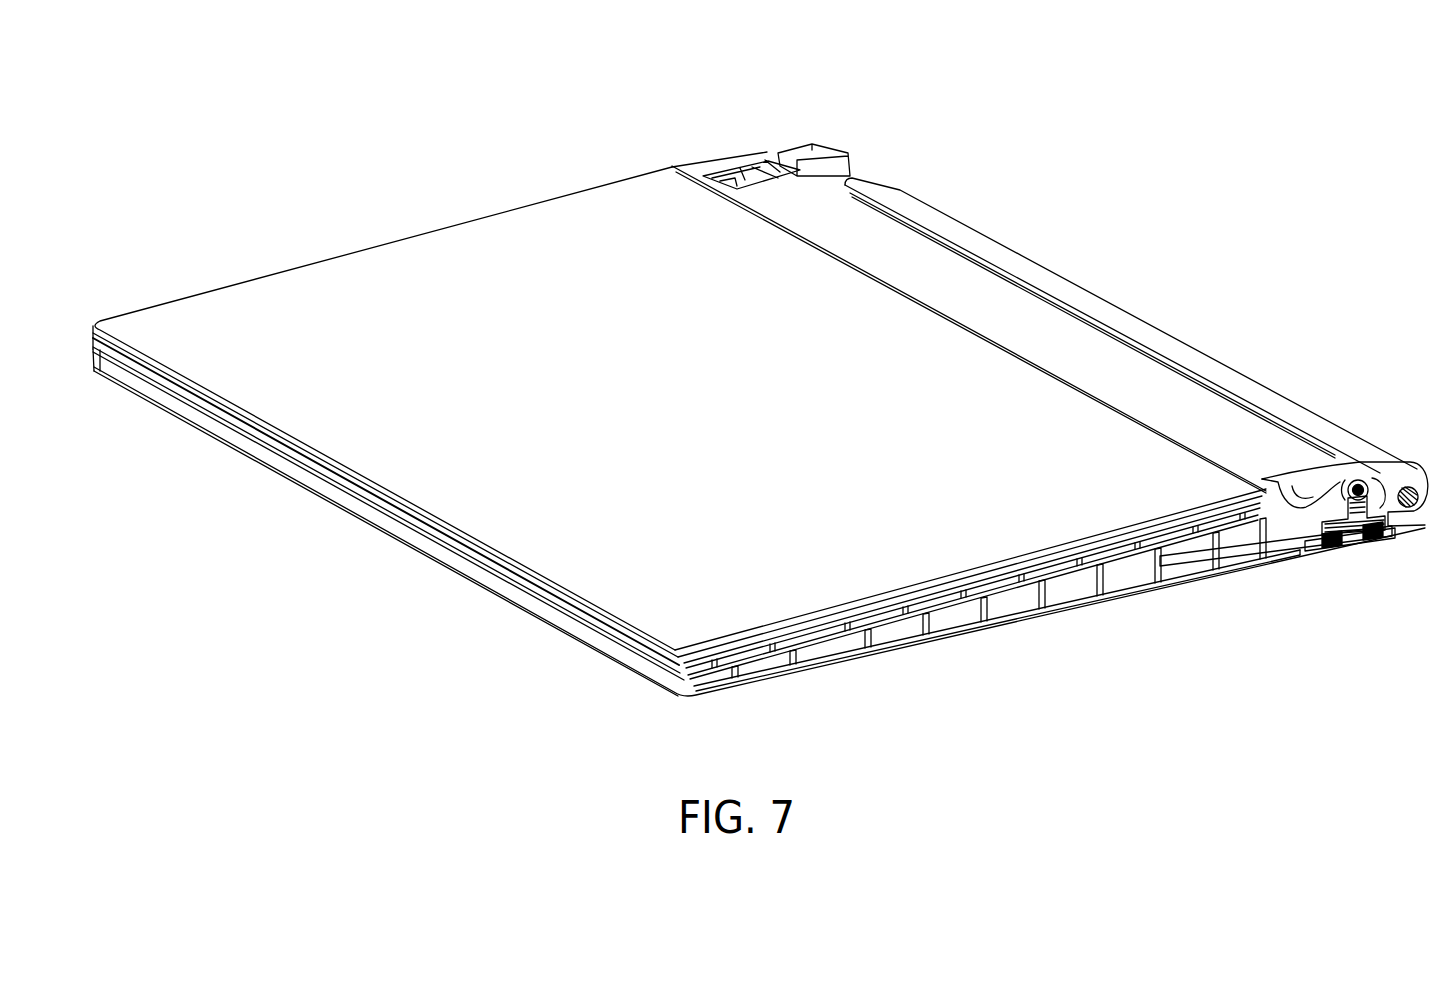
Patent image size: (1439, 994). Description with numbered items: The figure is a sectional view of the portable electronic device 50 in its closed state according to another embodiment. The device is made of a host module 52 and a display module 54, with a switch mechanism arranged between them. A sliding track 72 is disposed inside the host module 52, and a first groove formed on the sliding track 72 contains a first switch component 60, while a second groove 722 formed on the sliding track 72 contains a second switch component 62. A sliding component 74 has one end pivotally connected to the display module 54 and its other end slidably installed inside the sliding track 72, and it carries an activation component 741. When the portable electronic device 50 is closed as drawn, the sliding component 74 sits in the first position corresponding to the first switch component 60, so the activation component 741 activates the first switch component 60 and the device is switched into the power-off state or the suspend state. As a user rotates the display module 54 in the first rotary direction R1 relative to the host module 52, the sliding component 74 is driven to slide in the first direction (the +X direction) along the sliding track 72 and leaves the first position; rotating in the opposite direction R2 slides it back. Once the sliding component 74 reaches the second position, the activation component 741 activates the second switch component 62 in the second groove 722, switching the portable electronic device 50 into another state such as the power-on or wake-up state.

The portable electronic device 50 is at (1078, 127).
The host module 52 is at (511, 607).
The display module 54 is at (383, 382).
The first switch component 60 is at (1377, 542).
The second switch component 62 is at (1337, 552).
The sliding track 72 is at (1240, 558).
The second groove 722 is at (1330, 555).
The sliding component 74 is at (1317, 532).
The activation component 741 is at (1373, 478).